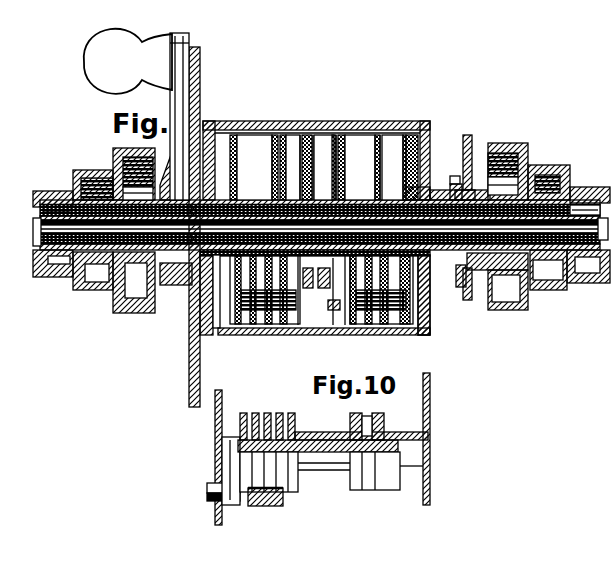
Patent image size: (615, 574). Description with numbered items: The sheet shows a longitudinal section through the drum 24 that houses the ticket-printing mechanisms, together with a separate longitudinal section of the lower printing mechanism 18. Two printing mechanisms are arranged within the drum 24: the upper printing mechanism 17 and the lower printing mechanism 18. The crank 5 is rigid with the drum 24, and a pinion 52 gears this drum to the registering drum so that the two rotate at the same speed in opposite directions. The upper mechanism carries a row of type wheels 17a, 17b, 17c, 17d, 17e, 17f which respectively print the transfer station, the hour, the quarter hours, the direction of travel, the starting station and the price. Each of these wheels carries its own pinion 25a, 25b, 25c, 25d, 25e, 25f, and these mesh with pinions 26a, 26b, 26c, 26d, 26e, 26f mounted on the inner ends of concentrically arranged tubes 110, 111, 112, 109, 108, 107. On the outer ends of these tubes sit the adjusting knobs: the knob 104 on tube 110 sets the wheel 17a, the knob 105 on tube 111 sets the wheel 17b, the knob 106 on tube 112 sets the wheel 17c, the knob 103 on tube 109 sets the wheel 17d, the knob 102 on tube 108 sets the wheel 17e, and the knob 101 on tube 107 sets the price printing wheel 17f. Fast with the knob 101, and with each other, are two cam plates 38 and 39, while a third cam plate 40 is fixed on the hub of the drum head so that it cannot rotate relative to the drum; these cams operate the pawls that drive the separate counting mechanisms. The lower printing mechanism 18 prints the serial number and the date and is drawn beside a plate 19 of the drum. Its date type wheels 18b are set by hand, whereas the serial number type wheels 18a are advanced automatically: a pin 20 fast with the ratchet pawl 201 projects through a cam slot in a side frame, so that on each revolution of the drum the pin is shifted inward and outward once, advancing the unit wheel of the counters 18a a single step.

In FIG. 8, the crank 5 is at (201, 118).
In FIG. 8, the pinion 52 is at (210, 127).
In FIG. 8, the pinion 25a is at (219, 183).
In FIG. 8, the pinion 25b is at (303, 140).
In FIG. 8, the pinion 25c is at (320, 150).
In FIG. 8, the pinion 25d is at (340, 140).
In FIG. 8, the pinion 25e is at (372, 140).
In FIG. 8, the pinion 25f is at (408, 168).
In FIG. 8, the printing mechanism 17 is at (288, 136).
In FIG. 8, the type wheel 17a is at (250, 136).
In FIG. 8, the type wheel 17b is at (306, 136).
In FIG. 8, the type wheel 17c is at (326, 136).
In FIG. 8, the type wheel 17d is at (356, 136).
In FIG. 8, the type wheel 17e is at (391, 136).
In FIG. 8, the price printing wheel 17f is at (413, 136).
In FIG. 8, the cam plate 38 is at (472, 143).
In FIG. 8, the cam plate 39 is at (455, 184).
In FIG. 8, the cam plate 40 is at (452, 180).
In FIG. 8, the knob 101 is at (522, 148).
In FIG. 8, the knob 102 is at (550, 176).
In FIG. 8, the knob 103 is at (582, 190).
In FIG. 8, the knob 104 is at (118, 157).
In FIG. 8, the knob 105 is at (82, 173).
In FIG. 8, the knob 106 is at (56, 191).
In FIG. 8, the tube 107 is at (511, 265).
In FIG. 8, the tube 108 is at (537, 276).
In FIG. 8, the tube 109 is at (582, 266).
In FIG. 8, the tube 110 is at (147, 272).
In FIG. 8, the tube 111 is at (100, 268).
In FIG. 8, the tube 112 is at (62, 258).
In FIG. 8, the serial number type wheels 18a is at (262, 328).
In FIG. 10, the serial number type wheels 18a is at (265, 509).
In FIG. 8, the date type wheels 18b is at (430, 334).
In FIG. 10, the date type wheels 18b is at (375, 483).
In FIG. 10, the printing mechanism 18 is at (333, 452).
In FIG. 8, the drum 24 is at (333, 310).
In FIG. 8, the pinion 26a is at (192, 288).
In FIG. 8, the pinion 26b is at (300, 307).
In FIG. 8, the pinion 26c is at (325, 290).
In FIG. 8, the pinion 26d is at (318, 325).
In FIG. 8, the pinion 26e is at (343, 300).
In FIG. 8, the pinion 26f is at (425, 276).
In FIG. 10, the side plate 19 is at (214, 425).
In FIG. 10, the pin 20 is at (212, 497).
In FIG. 10, the ratchet pawl 201 is at (250, 483).